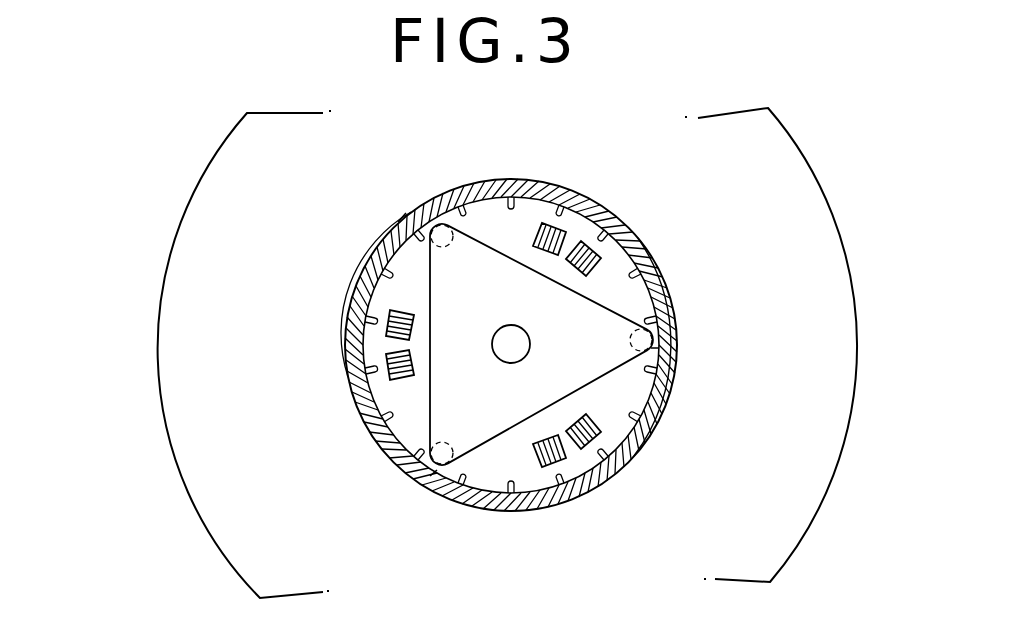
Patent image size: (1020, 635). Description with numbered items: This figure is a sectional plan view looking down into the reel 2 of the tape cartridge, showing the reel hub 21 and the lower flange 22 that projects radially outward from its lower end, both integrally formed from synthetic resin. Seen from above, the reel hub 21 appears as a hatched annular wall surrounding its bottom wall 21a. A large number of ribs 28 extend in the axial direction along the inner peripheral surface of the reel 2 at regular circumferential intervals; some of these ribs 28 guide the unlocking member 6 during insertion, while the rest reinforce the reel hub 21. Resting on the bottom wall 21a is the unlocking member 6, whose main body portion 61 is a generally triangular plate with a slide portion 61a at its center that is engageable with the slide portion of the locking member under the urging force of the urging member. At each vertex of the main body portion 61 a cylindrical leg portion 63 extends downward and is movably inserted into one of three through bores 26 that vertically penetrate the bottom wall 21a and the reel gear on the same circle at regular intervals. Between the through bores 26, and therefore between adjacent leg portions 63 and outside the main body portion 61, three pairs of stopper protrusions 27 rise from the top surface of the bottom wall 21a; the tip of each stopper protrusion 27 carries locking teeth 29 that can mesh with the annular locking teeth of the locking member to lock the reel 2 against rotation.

The reel 2 is at (203, 167).
The lower flange 22 is at (790, 156).
The reel hub 21 is at (530, 180).
The bottom wall 21a is at (660, 412).
The unlocking member 6 is at (472, 302).
The main body portion 61 is at (430, 292).
The slide portion 61a is at (493, 362).
The through bores 26 is at (437, 224).
The stopper protrusions 27 is at (465, 344).
The ribs 28 is at (405, 236).
The locking teeth 29 is at (413, 356).
The leg portions 63 is at (403, 207).